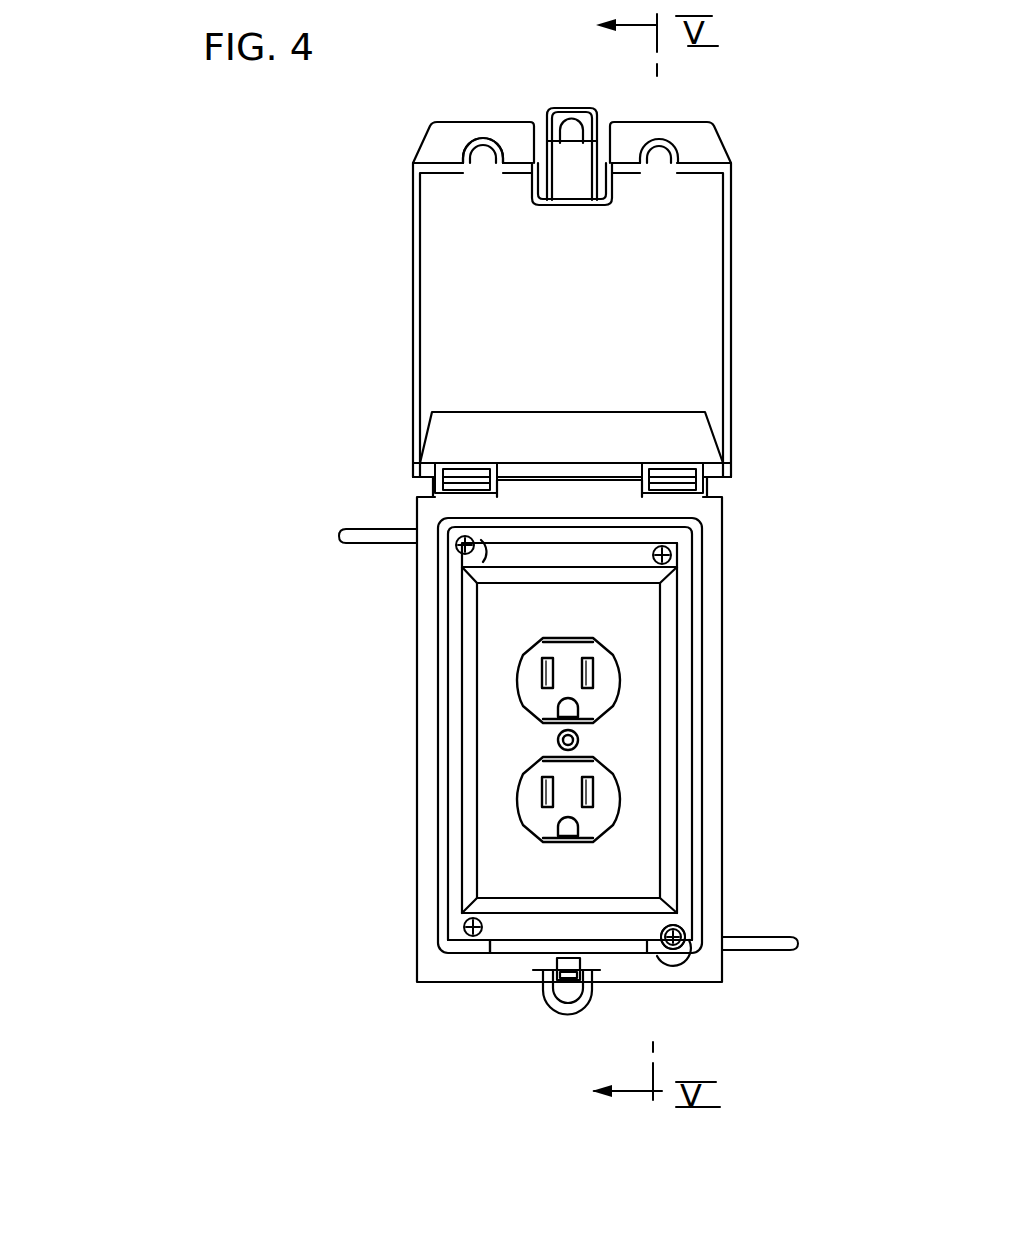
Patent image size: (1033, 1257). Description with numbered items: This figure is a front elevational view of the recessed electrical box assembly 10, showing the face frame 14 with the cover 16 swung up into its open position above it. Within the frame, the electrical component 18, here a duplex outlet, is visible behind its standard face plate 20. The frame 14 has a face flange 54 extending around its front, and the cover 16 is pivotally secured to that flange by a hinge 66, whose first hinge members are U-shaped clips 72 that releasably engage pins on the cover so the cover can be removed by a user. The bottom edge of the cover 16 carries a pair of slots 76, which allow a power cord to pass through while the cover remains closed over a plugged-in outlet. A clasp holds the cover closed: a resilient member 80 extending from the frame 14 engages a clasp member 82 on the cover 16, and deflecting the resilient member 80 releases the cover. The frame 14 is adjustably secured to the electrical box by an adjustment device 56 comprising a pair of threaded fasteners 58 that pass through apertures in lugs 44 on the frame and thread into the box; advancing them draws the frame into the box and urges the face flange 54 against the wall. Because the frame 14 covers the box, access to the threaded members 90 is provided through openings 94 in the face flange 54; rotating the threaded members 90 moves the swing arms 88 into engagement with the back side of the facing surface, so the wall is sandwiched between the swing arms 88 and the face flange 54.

The recessed electrical box assembly 10 is at (180, 410).
The face frame 14 is at (418, 961).
The cover 16 is at (415, 236).
The electrical component 18 is at (600, 690).
The face plate 20 is at (642, 612).
The lugs 44 is at (483, 918).
The face flange 54 is at (437, 716).
The adjustment device 56 is at (664, 554).
The threaded fasteners 58 is at (471, 925).
The hinge 66 is at (440, 491).
The U-shaped clips 72 is at (615, 554).
The slots 76 is at (482, 153).
The resilient member 80 is at (591, 979).
The clasp member 82 is at (562, 112).
The swing arms 88 is at (797, 943).
The threaded members 90 is at (675, 950).
The openings 94 is at (465, 546).